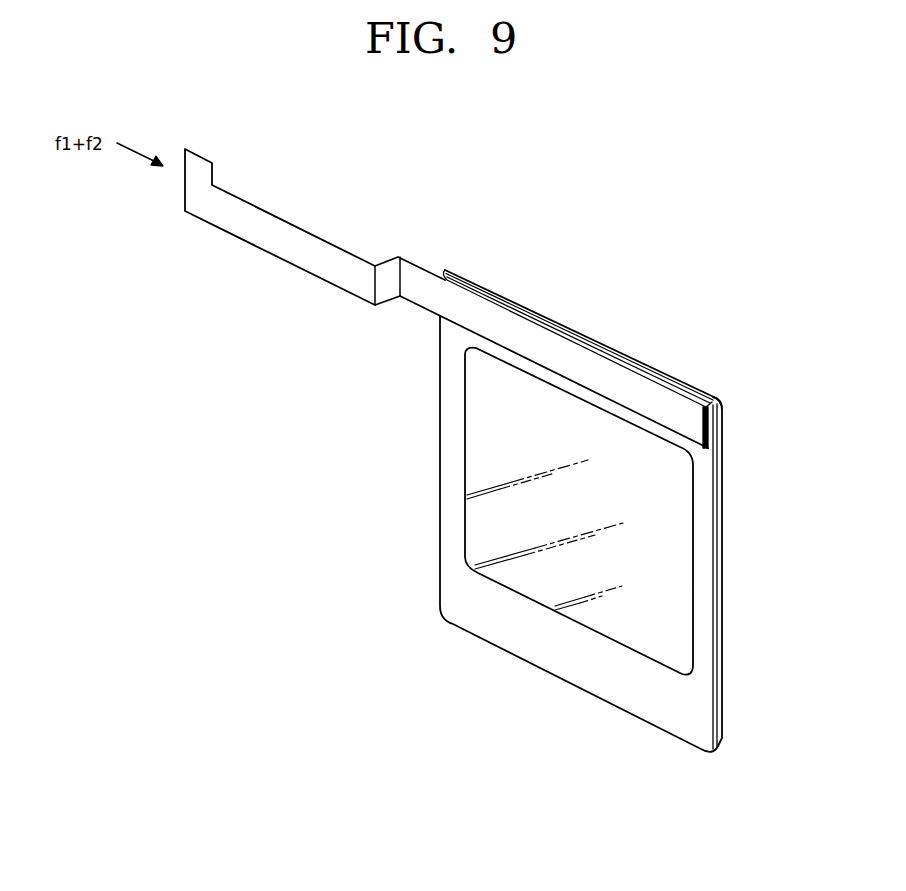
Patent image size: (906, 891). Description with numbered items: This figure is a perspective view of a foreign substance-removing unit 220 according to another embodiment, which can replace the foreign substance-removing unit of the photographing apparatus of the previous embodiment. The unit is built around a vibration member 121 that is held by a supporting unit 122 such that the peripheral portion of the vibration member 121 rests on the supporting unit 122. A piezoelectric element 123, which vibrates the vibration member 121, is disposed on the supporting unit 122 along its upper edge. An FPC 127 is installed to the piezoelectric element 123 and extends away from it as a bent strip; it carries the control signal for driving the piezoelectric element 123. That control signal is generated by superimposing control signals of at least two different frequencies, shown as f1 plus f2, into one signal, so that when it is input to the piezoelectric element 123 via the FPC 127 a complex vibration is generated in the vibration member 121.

The vibration member 121 is at (675, 530).
The supporting unit 122 is at (710, 620).
The piezoelectric element 123 is at (713, 430).
The FPC 127 is at (289, 223).
The foreign substance-removing unit 220 is at (578, 306).